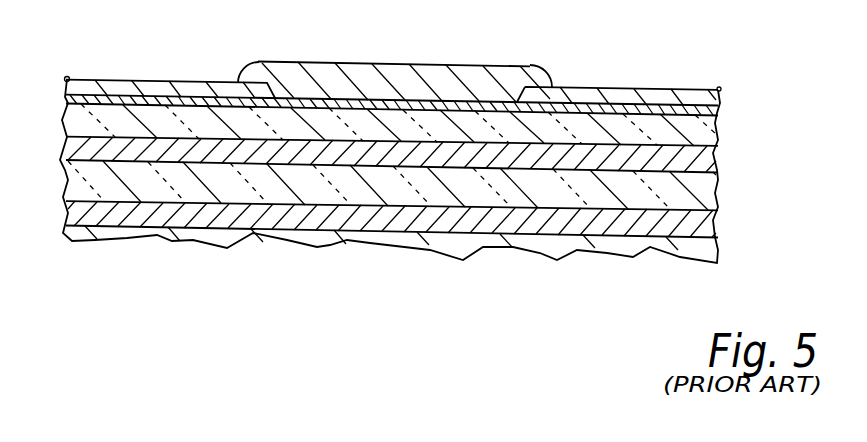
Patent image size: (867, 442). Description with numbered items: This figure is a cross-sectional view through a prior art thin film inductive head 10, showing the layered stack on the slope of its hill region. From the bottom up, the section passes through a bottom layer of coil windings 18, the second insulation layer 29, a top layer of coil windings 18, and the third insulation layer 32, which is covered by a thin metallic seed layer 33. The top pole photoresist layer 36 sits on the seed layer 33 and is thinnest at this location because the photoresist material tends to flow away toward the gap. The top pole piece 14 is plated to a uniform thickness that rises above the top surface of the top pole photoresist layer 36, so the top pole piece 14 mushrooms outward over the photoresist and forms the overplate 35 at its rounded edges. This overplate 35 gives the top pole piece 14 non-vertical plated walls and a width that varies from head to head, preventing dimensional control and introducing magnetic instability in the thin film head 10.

The thin film inductive head 10 is at (253, 256).
The top pole piece 14 is at (408, 83).
The coil windings 18 is at (140, 148).
The second insulation layer 29 is at (565, 192).
The third insulation layer 32 is at (543, 130).
The metallic seed layer 33 is at (178, 106).
The overplate 35 is at (257, 72).
The top pole photoresist layer 36 is at (136, 85).